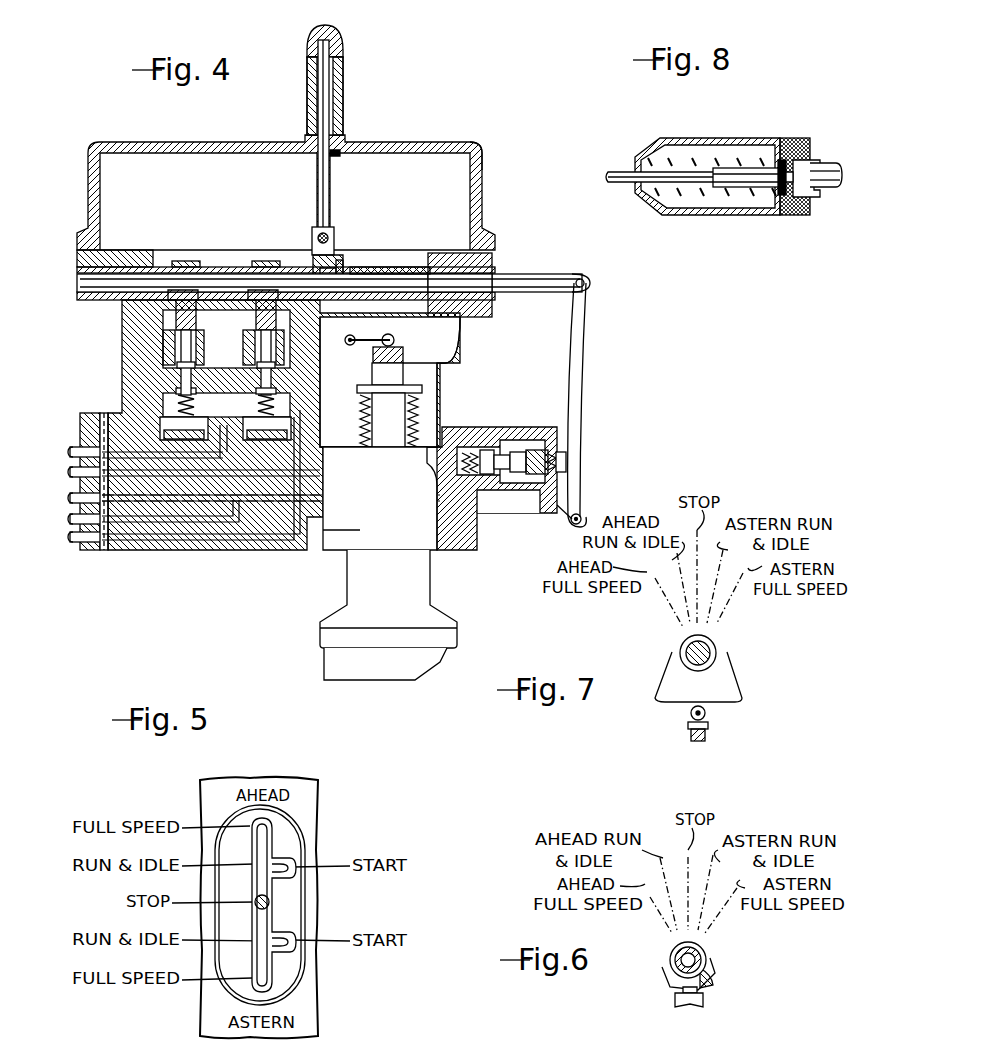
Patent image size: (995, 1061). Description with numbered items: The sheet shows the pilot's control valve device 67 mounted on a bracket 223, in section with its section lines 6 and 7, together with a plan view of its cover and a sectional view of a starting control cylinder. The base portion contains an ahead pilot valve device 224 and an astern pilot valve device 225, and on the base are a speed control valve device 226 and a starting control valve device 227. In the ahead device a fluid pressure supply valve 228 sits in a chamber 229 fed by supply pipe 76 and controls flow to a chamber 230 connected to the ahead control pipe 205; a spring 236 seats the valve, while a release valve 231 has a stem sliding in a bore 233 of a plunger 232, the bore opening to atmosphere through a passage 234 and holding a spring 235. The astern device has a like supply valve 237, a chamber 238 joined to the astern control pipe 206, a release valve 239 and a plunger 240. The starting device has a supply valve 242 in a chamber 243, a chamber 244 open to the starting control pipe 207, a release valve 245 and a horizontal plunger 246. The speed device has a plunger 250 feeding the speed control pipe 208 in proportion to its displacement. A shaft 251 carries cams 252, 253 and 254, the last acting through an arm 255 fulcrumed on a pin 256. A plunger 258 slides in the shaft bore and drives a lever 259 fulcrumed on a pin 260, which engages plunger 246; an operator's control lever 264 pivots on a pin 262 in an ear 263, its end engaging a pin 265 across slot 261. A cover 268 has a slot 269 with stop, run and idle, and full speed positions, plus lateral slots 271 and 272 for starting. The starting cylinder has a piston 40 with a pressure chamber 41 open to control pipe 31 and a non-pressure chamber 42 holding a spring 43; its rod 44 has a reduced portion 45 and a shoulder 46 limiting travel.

In FIG. 4, the section line 6— 6 is at (157, 249).
In FIG. 4, the section line 7— 7 is at (373, 248).
In FIG. 8, the control pipe 31 is at (835, 171).
In FIG. 8, the piston 40 is at (760, 210).
In FIG. 8, the pressure chamber 41 is at (812, 194).
In FIG. 8, the non-pressure chamber 42 is at (677, 205).
In FIG. 8, the spring 43 is at (692, 162).
In FIG. 8, the rod 44 is at (728, 170).
In FIG. 8, the reduced portion 45 is at (625, 183).
In FIG. 8, the shoulder 46 is at (708, 188).
In FIG. 4, the pilot's control valve device 67 is at (470, 143).
In FIG. 4, the fluid pressure supply pipe 76 is at (68, 535).
In FIG. 4, the ahead control pipe 205 is at (92, 504).
In FIG. 4, the astern control pipe 206 is at (73, 520).
In FIG. 4, the starting control pipe 207 is at (88, 550).
In FIG. 4, the speed control pipe 208 is at (76, 470).
In FIG. 4, the bracket 223 is at (112, 550).
In FIG. 4, the ahead pilot valve device 224 is at (148, 344).
In FIG. 4, the astern pilot valve device 225 is at (314, 394).
In FIG. 4, the speed control valve device 226 is at (431, 582).
In FIG. 4, the starting control valve device 227 is at (468, 427).
In FIG. 4, the fluid pressure supply valve 228 is at (174, 391).
In FIG. 4, the chamber 229 is at (314, 430).
In FIG. 4, the chamber 230 is at (172, 366).
In FIG. 4, the release valve 231 is at (198, 367).
In FIG. 4, the plunger 232 is at (199, 338).
In FIG. 6, the plunger 232 is at (680, 1003).
In FIG. 4, the bore 233 is at (202, 284).
In FIG. 4, the passage 234 is at (200, 332).
In FIG. 4, the spring 235 is at (176, 328).
In FIG. 4, the spring 236 is at (174, 408).
In FIG. 4, the supply valve 237 is at (314, 412).
In FIG. 4, the chamber 238 is at (314, 375).
In FIG. 4, the release valve 239 is at (276, 355).
In FIG. 4, the plunger 240 is at (279, 326).
In FIG. 4, the supply valve 242 is at (486, 430).
In FIG. 4, the chamber 243 is at (490, 505).
In FIG. 4, the chamber 244 is at (480, 478).
In FIG. 4, the fluid pressure release valve 245 is at (512, 432).
In FIG. 4, the plunger 246 is at (537, 432).
In FIG. 4, the plunger 250 is at (405, 355).
In FIG. 7, the plunger 250 is at (708, 730).
In FIG. 4, the shaft 251 is at (492, 256).
In FIG. 7, the shaft 251 is at (715, 660).
In FIG. 6, the shaft 251 is at (709, 963).
In FIG. 4, the cam 252 is at (186, 262).
In FIG. 6, the cam 252 is at (666, 978).
In FIG. 4, the astern cam 253 is at (262, 262).
In FIG. 6, the astern cam 253 is at (713, 982).
In FIG. 4, the cam 254 is at (391, 269).
In FIG. 7, the cam 254 is at (668, 682).
In FIG. 4, the arm 255 is at (395, 338).
In FIG. 7, the arm 255 is at (706, 714).
In FIG. 4, the pin 256 is at (362, 320).
In FIG. 4, the plunger 258 is at (541, 275).
In FIG. 7, the plunger 258 is at (716, 646).
In FIG. 6, the plunger 258 is at (707, 953).
In FIG. 4, the lever 259 is at (581, 377).
In FIG. 4, the pin 260 is at (580, 516).
In FIG. 4, the slot 261 is at (340, 262).
In FIG. 4, the pin 262 is at (317, 234).
In FIG. 4, the ear 263 is at (333, 240).
In FIG. 4, the operator's control lever 264 is at (317, 185).
In FIG. 5, the operator's control lever 264 is at (285, 902).
In FIG. 4, the pin 265 is at (315, 263).
In FIG. 4, the cover 268 is at (483, 170).
In FIG. 5, the cover 268 is at (318, 860).
In FIG. 4, the slot 269 is at (317, 167).
In FIG. 5, the slot 269 is at (280, 965).
In FIG. 4, the slot 271 is at (341, 153).
In FIG. 5, the slot 271 is at (296, 858).
In FIG. 5, the slot 272 is at (290, 948).